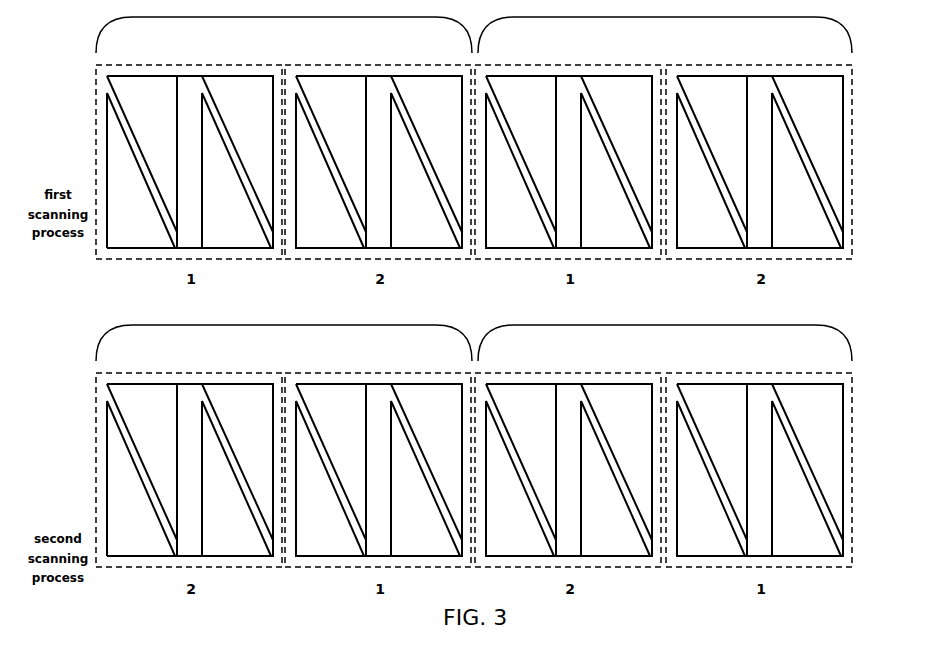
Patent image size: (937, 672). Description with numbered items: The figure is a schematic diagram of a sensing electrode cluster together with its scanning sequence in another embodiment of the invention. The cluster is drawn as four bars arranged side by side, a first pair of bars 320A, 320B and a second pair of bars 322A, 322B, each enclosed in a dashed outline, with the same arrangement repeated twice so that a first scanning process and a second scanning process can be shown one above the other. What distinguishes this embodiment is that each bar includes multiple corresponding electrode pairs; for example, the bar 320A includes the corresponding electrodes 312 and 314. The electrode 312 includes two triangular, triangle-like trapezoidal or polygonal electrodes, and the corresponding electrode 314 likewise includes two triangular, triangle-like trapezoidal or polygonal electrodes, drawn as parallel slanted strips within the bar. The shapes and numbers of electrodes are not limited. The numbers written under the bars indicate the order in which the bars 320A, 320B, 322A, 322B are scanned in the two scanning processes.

The electrode 312 is at (107, 76).
The corresponding electrode 314 is at (107, 120).
The bar 320A is at (125, 65).
The bar 320B is at (314, 65).
The bar 322A is at (504, 65).
The bar 322B is at (695, 65).